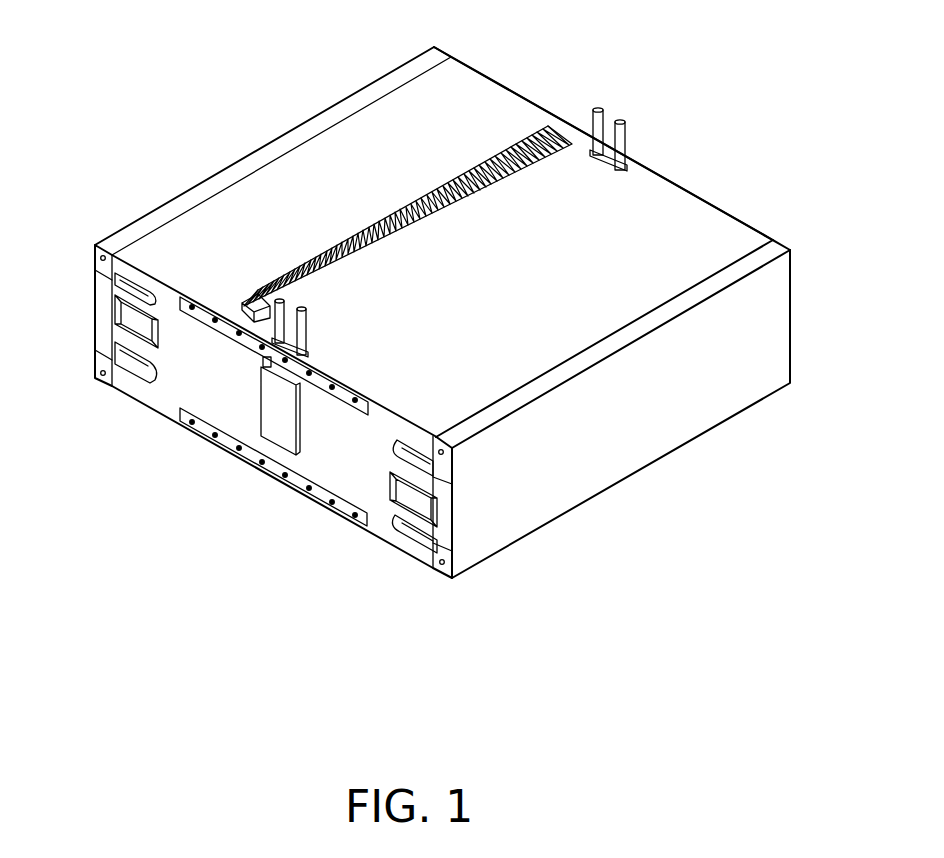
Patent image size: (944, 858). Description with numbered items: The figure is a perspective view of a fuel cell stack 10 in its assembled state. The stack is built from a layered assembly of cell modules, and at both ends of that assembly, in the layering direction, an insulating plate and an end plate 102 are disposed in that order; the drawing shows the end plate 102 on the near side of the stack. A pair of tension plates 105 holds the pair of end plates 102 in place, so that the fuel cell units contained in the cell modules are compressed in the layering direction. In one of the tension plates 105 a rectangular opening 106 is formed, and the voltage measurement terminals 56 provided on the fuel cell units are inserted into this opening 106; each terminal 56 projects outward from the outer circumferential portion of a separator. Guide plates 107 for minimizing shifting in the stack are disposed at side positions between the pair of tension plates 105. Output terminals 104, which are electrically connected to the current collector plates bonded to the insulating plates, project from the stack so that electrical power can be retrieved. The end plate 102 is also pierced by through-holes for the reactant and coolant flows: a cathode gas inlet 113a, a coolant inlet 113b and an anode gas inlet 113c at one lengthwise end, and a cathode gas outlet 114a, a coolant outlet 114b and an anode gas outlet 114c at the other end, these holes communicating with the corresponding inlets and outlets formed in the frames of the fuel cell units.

The fuel cell stack 10 is at (63, 35).
The voltage measurement terminal 56 is at (250, 292).
The end plate 102 is at (316, 470).
The output terminal 104 is at (278, 322).
The tension plate 105 is at (667, 196).
The rectangular opening 106 is at (303, 280).
The guide plate 107 is at (713, 413).
The cathode gas inlet 113a is at (112, 275).
The coolant inlet 113b is at (112, 322).
The anode gas inlet 113c is at (110, 358).
The cathode gas outlet 114a is at (465, 572).
The coolant outlet 114b is at (452, 533).
The anode gas outlet 114c is at (447, 478).